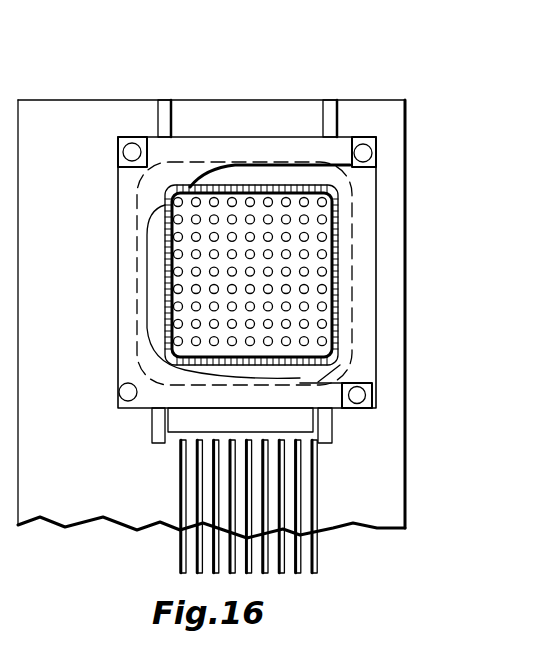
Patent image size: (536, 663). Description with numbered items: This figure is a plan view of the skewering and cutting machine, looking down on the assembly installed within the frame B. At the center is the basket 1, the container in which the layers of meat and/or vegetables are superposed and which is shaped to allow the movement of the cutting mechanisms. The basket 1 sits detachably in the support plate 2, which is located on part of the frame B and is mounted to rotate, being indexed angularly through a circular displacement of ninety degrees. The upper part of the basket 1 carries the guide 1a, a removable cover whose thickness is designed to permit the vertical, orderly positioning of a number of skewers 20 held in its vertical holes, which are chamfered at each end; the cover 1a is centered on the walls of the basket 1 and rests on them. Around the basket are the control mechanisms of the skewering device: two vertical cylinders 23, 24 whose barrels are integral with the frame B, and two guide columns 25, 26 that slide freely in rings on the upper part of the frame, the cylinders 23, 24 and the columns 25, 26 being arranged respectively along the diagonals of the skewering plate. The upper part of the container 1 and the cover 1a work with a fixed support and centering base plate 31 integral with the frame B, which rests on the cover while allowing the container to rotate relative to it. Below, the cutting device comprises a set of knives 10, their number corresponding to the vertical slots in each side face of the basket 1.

The basket 1 is at (134, 276).
The guide 1a is at (352, 232).
The support plate 2 is at (335, 271).
The knives 10 is at (217, 515).
The skewers 20 is at (198, 338).
The vertical cylinder 23 is at (127, 152).
The vertical cylinder 24 is at (358, 398).
The guide column 25 is at (119, 392).
The guide column 26 is at (362, 151).
The base plate 31 is at (320, 393).
The frame B is at (181, 113).